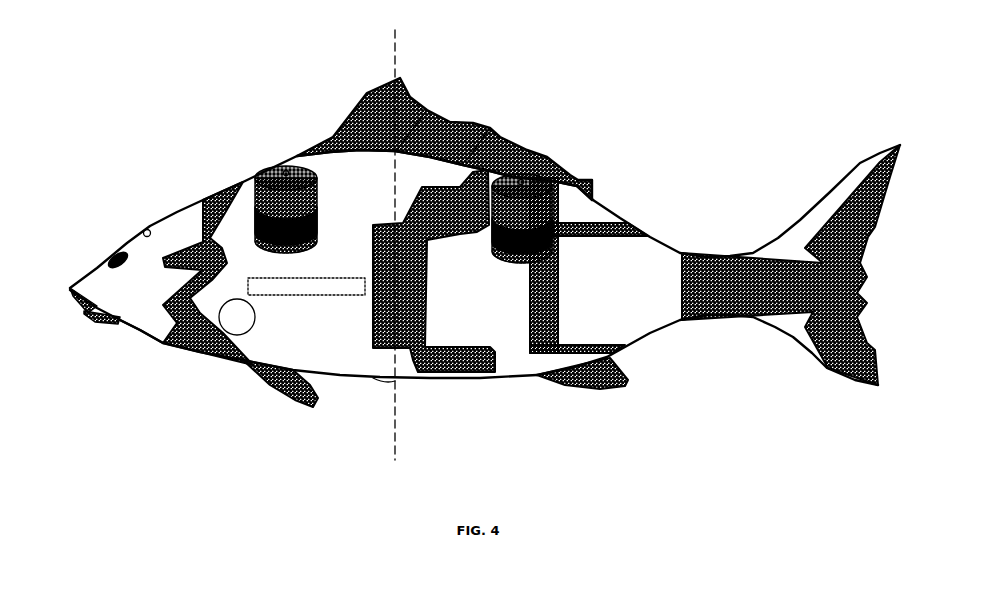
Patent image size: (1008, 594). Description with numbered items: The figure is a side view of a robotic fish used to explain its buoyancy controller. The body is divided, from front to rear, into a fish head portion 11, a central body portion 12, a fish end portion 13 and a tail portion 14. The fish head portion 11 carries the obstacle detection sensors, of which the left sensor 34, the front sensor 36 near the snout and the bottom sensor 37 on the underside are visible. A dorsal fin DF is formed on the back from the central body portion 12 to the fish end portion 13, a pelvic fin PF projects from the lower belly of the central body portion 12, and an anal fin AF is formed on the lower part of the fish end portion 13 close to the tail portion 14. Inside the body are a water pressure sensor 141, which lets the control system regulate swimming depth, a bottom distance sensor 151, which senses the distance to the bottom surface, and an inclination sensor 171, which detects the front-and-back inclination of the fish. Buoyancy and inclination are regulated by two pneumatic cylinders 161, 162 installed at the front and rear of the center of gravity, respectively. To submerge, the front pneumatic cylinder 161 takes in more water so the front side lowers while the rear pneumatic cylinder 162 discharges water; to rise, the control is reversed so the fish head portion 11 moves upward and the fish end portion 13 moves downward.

The fish head portion 11 is at (183, 220).
The central body portion 12 is at (337, 172).
The fish end portion 13 is at (577, 212).
The tail portion 14 is at (648, 263).
The left sensor 34 is at (112, 290).
The front sensor 36 is at (92, 270).
The bottom sensor 37 is at (150, 338).
The water pressure sensor 141 is at (217, 366).
The bottom distance sensor 151 is at (397, 378).
The front pneumatic cylinder 161 is at (267, 167).
The rear pneumatic cylinder 162 is at (520, 180).
The inclination sensor 171 is at (312, 295).
The dorsal fin DF is at (415, 93).
The pelvic fin PF is at (281, 397).
The anal fin AF is at (585, 388).